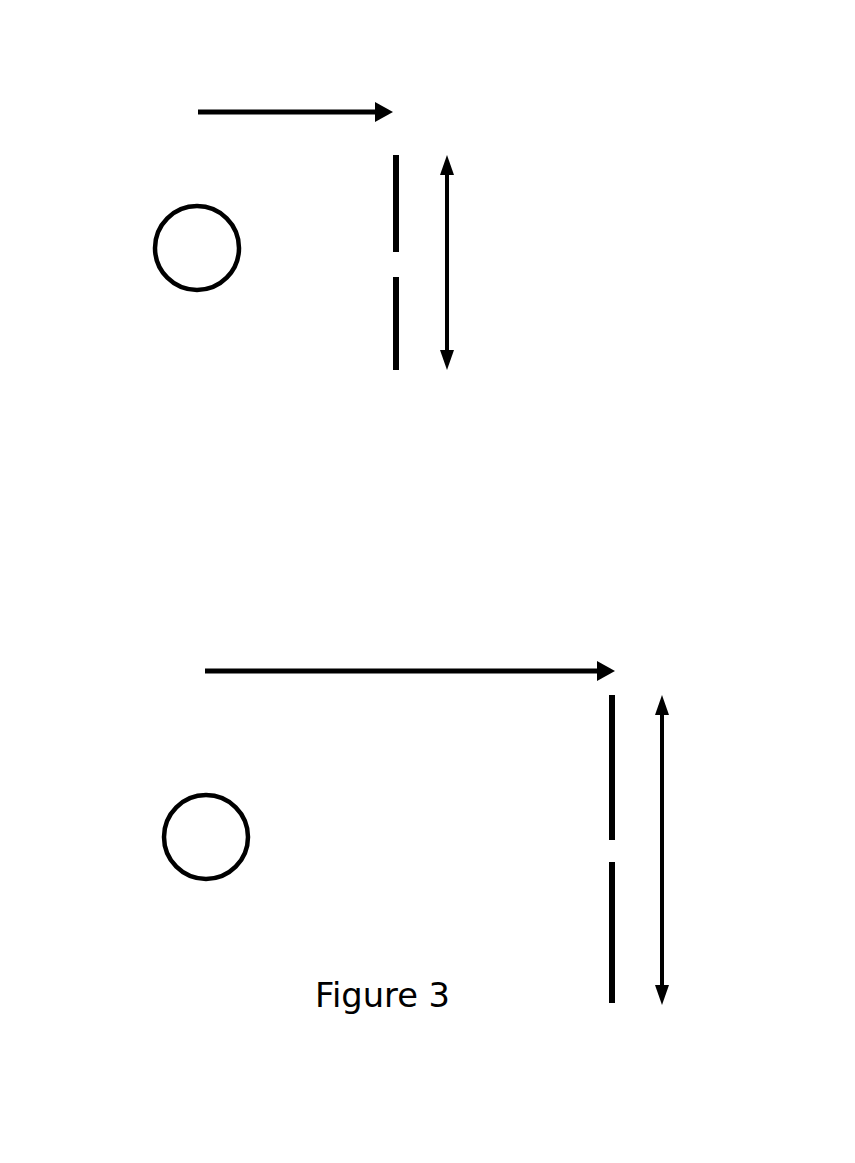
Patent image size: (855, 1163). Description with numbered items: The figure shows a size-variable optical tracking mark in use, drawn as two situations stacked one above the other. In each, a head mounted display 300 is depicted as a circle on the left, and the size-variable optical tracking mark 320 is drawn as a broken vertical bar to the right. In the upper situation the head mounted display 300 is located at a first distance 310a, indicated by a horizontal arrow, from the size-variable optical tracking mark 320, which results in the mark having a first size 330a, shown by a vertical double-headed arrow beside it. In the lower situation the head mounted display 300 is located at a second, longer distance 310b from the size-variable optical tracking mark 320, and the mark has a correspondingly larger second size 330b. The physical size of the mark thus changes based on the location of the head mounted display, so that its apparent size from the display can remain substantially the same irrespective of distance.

The head mounted display 300 is at (167, 220).
The first distance 310a is at (307, 110).
The second distance 310b is at (317, 668).
The size-variable optical tracking mark 320 is at (402, 155).
The first size 330a is at (452, 265).
The second size 330b is at (663, 857).